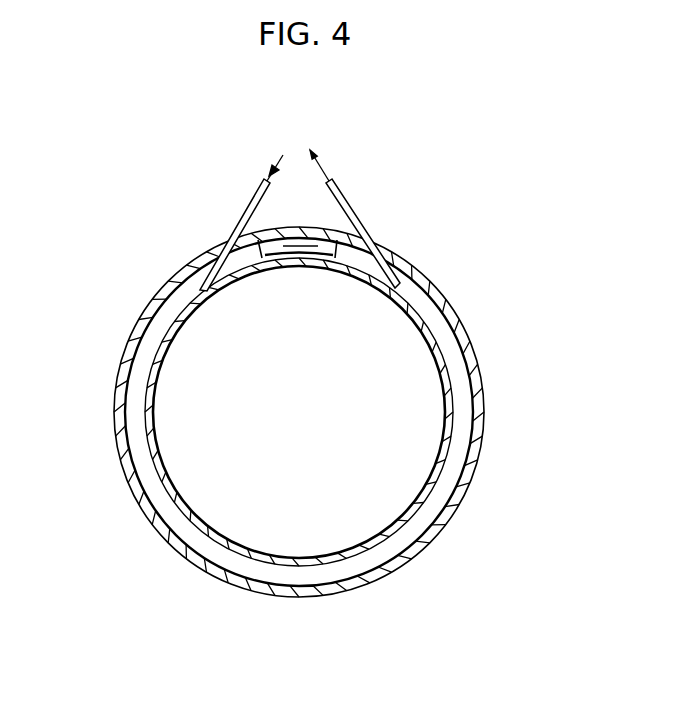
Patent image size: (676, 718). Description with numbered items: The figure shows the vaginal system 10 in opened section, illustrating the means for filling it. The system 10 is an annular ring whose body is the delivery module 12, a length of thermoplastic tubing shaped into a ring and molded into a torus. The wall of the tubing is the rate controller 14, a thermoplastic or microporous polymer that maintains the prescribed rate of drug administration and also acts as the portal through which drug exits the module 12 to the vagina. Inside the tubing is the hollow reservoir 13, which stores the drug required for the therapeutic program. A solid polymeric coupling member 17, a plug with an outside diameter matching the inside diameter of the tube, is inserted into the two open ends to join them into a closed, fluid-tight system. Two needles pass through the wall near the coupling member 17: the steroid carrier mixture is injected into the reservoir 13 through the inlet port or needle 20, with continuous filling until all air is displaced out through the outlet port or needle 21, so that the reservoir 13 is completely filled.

The vaginal system 10 is at (305, 412).
The delivery module 12 is at (478, 361).
The reservoir 13 is at (148, 479).
The rate controller 14 is at (480, 424).
The coupling member 17 is at (274, 247).
The inlet port or needle 20 is at (257, 205).
The outlet port or needle 21 is at (357, 210).